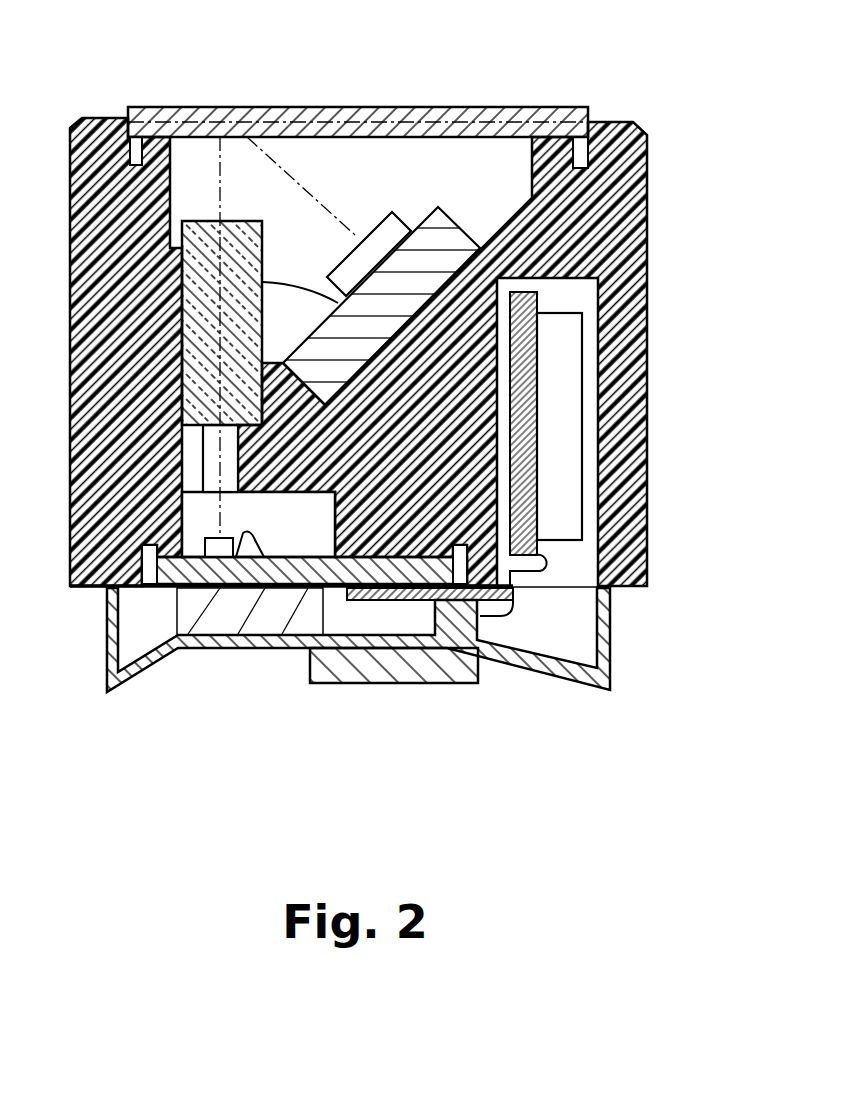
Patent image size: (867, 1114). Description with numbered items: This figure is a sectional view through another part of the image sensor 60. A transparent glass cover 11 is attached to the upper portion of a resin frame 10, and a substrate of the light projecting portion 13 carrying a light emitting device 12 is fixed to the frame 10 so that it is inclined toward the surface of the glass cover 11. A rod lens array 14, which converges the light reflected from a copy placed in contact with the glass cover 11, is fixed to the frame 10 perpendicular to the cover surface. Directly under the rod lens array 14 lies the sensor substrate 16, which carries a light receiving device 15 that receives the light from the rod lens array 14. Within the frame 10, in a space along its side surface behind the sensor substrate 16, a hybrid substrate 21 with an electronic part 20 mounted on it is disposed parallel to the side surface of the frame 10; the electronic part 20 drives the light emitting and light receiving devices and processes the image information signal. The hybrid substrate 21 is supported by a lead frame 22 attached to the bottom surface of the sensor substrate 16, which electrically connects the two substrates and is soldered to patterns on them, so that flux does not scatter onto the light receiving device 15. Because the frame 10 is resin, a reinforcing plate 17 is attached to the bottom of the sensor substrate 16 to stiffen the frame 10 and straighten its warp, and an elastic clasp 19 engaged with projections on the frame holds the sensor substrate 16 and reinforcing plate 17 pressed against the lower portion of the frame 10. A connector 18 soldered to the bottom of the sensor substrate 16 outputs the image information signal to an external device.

The resin frame 10 is at (603, 220).
The transparent cover 11 is at (273, 113).
The light emitting device 12 is at (383, 237).
The substrate of light projecting portion 13 is at (440, 240).
The rod lens array 14 is at (203, 250).
The light receiving device 15 is at (222, 550).
The sensor substrate 16 is at (263, 575).
The reinforcing plate 17 is at (304, 623).
The connector 18 is at (390, 663).
The elastic clasp 19 is at (507, 657).
The electronic part 20 is at (563, 360).
The hybrid substrate 21 is at (535, 416).
The lead frame 22 is at (453, 603).
The image sensor 60 is at (677, 221).